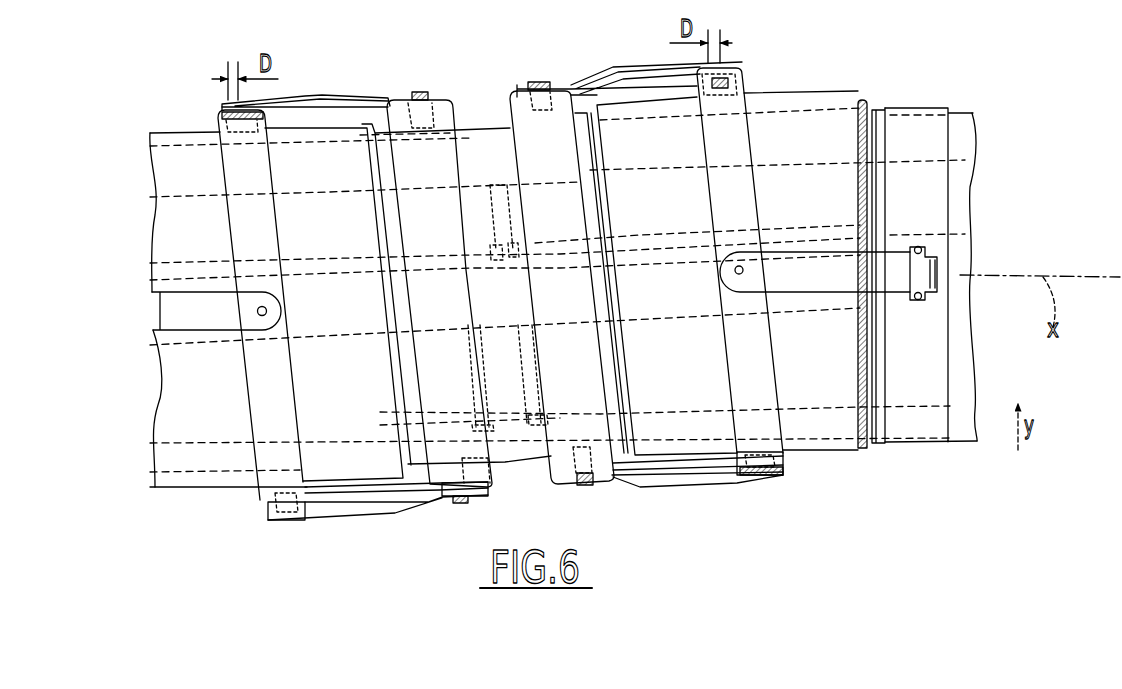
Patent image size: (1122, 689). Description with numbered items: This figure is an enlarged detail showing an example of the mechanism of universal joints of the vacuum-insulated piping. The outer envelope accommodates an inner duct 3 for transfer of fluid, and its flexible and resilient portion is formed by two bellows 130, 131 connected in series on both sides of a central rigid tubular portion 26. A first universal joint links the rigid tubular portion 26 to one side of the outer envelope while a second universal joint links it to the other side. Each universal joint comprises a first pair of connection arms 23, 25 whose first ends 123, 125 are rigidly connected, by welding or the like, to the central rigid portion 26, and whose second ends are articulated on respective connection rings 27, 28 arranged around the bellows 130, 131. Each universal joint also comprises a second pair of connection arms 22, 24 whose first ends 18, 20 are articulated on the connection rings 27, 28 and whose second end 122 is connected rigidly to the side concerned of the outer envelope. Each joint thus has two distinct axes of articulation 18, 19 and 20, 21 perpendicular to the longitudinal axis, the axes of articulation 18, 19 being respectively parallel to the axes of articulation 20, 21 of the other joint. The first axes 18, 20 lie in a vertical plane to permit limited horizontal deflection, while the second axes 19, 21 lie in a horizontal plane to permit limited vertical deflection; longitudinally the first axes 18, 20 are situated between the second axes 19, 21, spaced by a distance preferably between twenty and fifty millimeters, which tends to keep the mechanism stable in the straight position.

The inner duct 3 is at (973, 145).
The first axis of articulation 18 is at (741, 266).
The second axis of articulation 19 is at (729, 54).
The first axis of articulation 20 is at (260, 318).
The second axis of articulation 21 is at (227, 99).
The connection arm 22 is at (812, 251).
The connection arm 23 is at (652, 60).
The connection arm 24 is at (193, 490).
The connection arm 25 is at (318, 93).
The rigid tubular portion 26 is at (476, 126).
The connection ring 27 is at (785, 466).
The connection ring 28 is at (283, 472).
The second end 122 is at (947, 260).
The first end 123 is at (528, 80).
The first end 125 is at (416, 89).
The bellows 130 is at (187, 330).
The bellows 131 is at (774, 91).